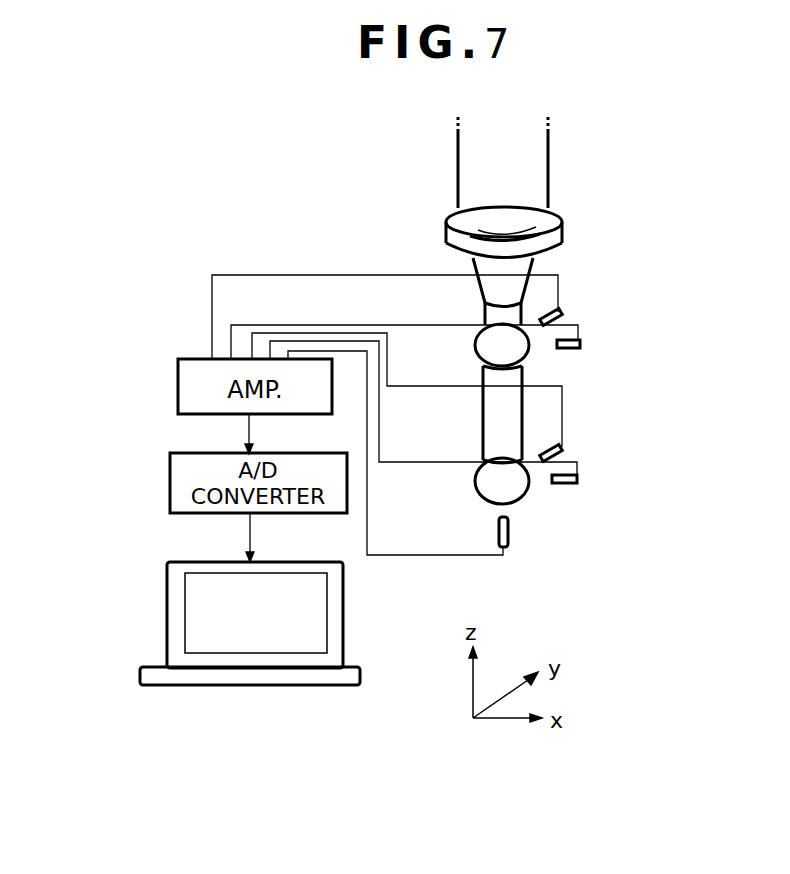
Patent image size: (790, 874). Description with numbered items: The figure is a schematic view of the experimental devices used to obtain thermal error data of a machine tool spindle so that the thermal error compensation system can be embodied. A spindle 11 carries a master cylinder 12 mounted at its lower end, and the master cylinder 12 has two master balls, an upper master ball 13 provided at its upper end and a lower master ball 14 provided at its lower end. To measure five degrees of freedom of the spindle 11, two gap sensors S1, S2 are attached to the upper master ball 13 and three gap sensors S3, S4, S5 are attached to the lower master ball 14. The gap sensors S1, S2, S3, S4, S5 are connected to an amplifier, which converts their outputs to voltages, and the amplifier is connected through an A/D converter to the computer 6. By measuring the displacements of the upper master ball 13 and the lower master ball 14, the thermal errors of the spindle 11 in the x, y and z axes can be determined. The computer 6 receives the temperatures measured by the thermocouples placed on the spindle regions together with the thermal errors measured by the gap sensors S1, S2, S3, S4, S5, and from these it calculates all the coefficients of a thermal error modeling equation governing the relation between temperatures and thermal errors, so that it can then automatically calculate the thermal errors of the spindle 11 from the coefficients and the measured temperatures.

The spindle 11 is at (548, 172).
The master cylinder 12 is at (515, 428).
The upper master ball 13 is at (522, 348).
The lower master ball 14 is at (524, 488).
The computer 6 is at (172, 612).
The gap sensor S1 is at (580, 344).
The gap sensor S2 is at (560, 311).
The gap sensor S3 is at (578, 484).
The gap sensor S4 is at (566, 450).
The gap sensor S5 is at (508, 540).